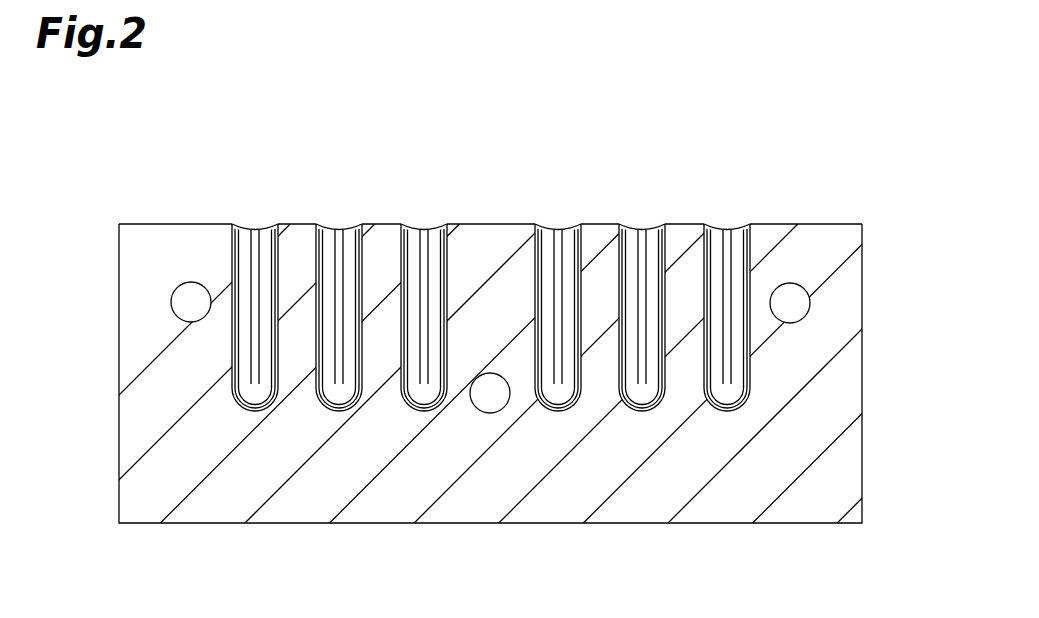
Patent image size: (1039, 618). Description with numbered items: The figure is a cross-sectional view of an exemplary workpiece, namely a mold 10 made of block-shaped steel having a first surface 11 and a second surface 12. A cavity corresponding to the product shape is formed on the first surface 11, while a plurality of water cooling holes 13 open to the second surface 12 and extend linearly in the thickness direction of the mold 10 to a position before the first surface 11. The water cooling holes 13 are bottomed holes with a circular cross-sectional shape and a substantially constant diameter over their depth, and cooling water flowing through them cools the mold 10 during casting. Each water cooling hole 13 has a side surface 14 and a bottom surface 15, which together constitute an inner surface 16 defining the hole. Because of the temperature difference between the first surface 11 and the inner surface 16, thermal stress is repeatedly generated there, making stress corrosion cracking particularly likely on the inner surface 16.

The mold 10 is at (872, 180).
The first surface 11 is at (797, 523).
The second surface 12 is at (798, 223).
The water cooling holes 13 is at (643, 248).
The side surface 14 is at (243, 360).
The bottom surface 15 is at (273, 408).
The inner surface 16 is at (151, 407).